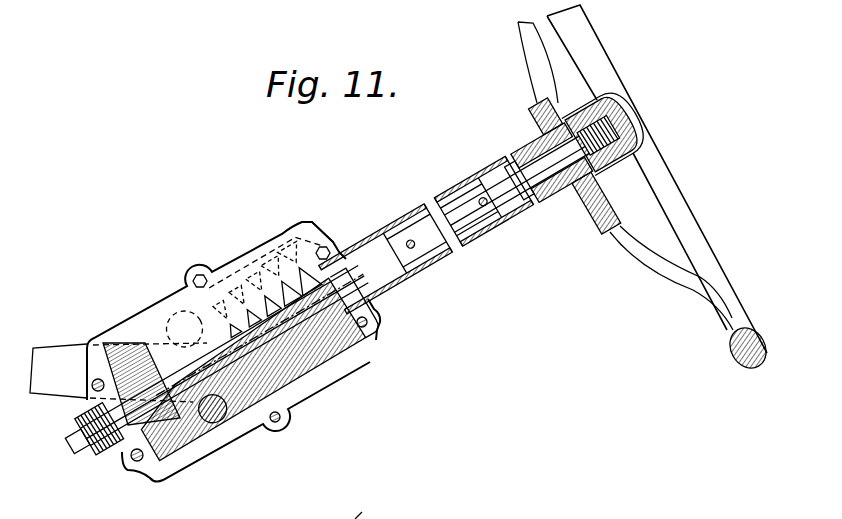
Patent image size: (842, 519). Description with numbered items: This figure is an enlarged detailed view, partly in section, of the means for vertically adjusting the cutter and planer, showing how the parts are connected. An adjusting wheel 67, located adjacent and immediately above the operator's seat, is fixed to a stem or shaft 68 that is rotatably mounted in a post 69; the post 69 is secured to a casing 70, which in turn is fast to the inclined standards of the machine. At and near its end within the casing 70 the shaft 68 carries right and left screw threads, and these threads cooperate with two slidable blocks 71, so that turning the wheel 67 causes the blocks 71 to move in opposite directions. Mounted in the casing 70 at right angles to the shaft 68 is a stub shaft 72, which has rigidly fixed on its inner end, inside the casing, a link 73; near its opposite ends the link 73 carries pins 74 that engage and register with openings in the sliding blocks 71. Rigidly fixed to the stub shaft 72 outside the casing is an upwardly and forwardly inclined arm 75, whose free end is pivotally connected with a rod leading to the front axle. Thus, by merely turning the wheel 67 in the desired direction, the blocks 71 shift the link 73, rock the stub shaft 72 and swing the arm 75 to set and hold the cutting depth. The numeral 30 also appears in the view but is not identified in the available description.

The frame 30 is at (371, 505).
The adjusting wheel 67 is at (698, 244).
The stem or shaft 68 is at (436, 262).
The post 69 is at (447, 210).
The casing 70 is at (319, 226).
The slidable blocks 71 is at (232, 300).
The stub shaft 72 is at (146, 458).
The link 73 is at (128, 442).
The pins 74 is at (168, 335).
The arm 75 is at (50, 358).